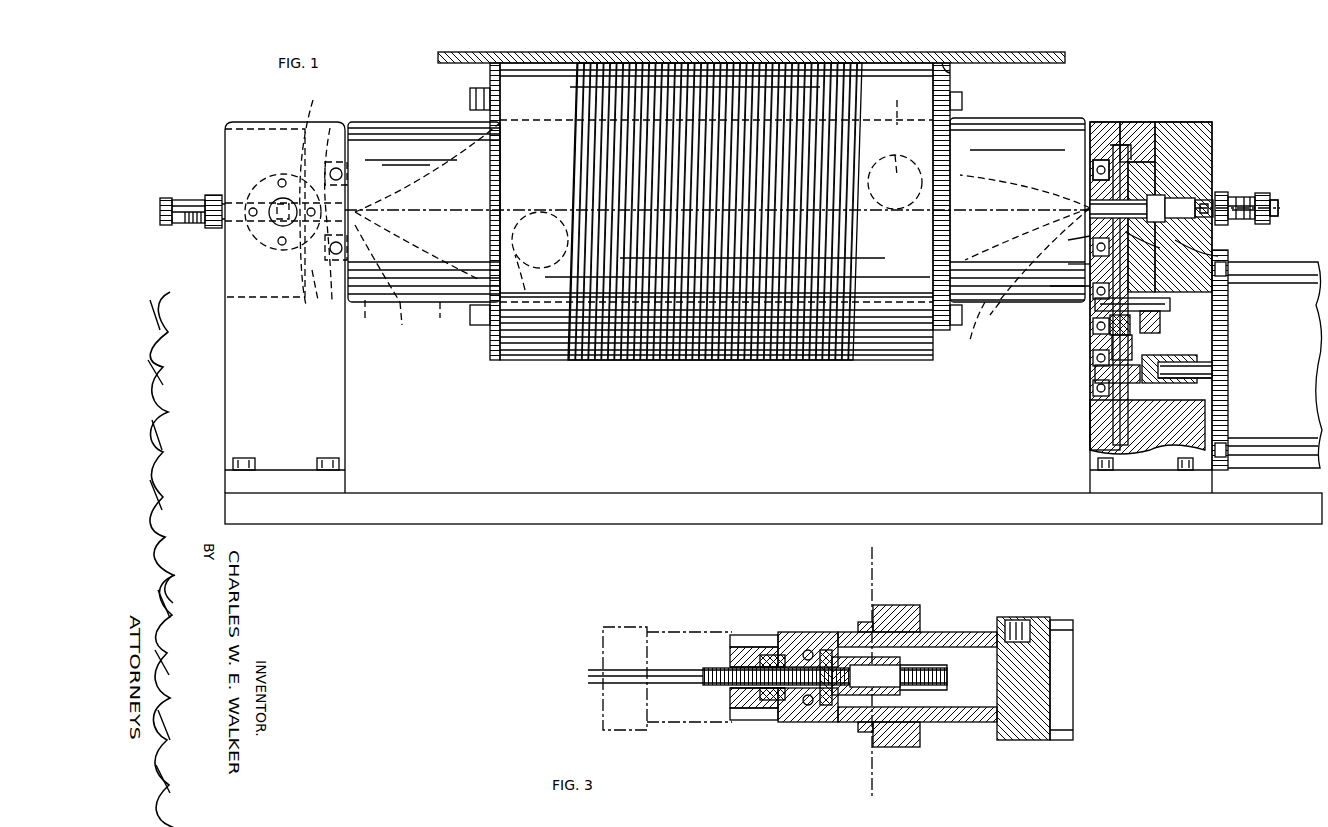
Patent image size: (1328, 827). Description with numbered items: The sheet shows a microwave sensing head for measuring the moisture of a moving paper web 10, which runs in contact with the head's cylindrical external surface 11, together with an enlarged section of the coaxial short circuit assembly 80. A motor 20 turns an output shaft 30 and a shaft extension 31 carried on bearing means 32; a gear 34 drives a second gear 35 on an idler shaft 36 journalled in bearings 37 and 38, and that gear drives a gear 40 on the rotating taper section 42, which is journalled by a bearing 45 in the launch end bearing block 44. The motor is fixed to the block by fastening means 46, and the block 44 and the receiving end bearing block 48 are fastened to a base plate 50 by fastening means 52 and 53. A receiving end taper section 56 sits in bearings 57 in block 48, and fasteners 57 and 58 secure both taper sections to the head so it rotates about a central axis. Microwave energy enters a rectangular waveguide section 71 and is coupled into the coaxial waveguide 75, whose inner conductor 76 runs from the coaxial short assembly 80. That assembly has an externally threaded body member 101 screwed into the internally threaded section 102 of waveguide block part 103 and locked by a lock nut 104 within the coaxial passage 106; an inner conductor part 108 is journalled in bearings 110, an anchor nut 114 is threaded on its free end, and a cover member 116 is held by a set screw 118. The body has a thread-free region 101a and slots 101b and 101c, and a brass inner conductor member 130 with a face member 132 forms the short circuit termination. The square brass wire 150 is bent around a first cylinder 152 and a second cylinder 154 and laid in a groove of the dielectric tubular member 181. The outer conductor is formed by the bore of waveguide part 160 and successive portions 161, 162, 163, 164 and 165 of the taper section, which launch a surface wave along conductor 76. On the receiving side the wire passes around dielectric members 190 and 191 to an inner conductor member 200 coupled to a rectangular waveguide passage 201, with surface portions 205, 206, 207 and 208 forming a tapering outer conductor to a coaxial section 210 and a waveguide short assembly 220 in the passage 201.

In FIG. 1, the moving paper web 10 is at (1050, 52).
In FIG. 1, the cylindrical external surface 11 is at (956, 72).
In FIG. 1, the motor 20 is at (1268, 262).
In FIG. 1, the output shaft 30 is at (1200, 368).
In FIG. 1, the shaft extension 31 is at (1212, 386).
In FIG. 1, the bearing means 32 is at (1092, 382).
In FIG. 1, the gear 34 is at (1098, 410).
In FIG. 1, the second gear 35 is at (1092, 345).
In FIG. 1, the idler shaft 36 is at (1170, 306).
In FIG. 1, the bearing 37 is at (1090, 318).
In FIG. 1, the bearing 38 is at (1160, 322).
In FIG. 1, the gear 40 is at (1140, 140).
In FIG. 1, the rotating taper section 42 is at (1030, 118).
In FIG. 1, the launch end bearing block 44 is at (1120, 122).
In FIG. 1, the bearing 45 is at (1096, 158).
In FIG. 1, the fastening means 46 is at (1225, 272).
In FIG. 1, the receiving end bearing block 48 is at (262, 122).
In FIG. 1, the base plate 50 is at (560, 524).
In FIG. 1, the fastening means 52 is at (1098, 465).
In FIG. 1, the fastening means 53 is at (345, 466).
In FIG. 1, the receiving end taper section 56 is at (415, 122).
In FIG. 1, the bearings / fasteners 57 is at (340, 127).
In FIG. 1, the fasteners 58 is at (470, 100).
In FIG. 1, the rectangular waveguide section 71 is at (1160, 206).
In FIG. 3, the rectangular waveguide section 71 is at (635, 627).
In FIG. 1, the coaxial waveguide 75 is at (1125, 150).
In FIG. 1, the inner conductor 76 is at (1025, 183).
In FIG. 3, the inner conductor 76 is at (593, 680).
In FIG. 1, the coaxial short circuit assembly 80 is at (186, 230).
In FIG. 3, the coaxial short circuit assembly 80 is at (1040, 605).
In FIG. 1, the externally threaded body member 101 is at (1240, 197).
In FIG. 3, the externally threaded body member 101 is at (960, 632).
In FIG. 3, the region with external threads removed 101a is at (765, 632).
In FIG. 3, the slot 101b is at (748, 633).
In FIG. 3, the slot 101c is at (770, 722).
In FIG. 1, the internally threaded section 102 is at (1205, 217).
In FIG. 1, the waveguide block part 103 is at (1205, 135).
In FIG. 3, the waveguide block part 103 is at (875, 570).
In FIG. 1, the lock nut 104 is at (1222, 192).
In FIG. 3, the lock nut 104 is at (905, 605).
In FIG. 1, the coaxial passage 106 is at (1211, 252).
In FIG. 3, the coaxial passage 106 is at (700, 632).
In FIG. 3, the inner conductor part 108 is at (942, 690).
In FIG. 3, the bearings 110 is at (826, 650).
In FIG. 3, the anchor nut 114 is at (905, 656).
In FIG. 1, the cover member 116 is at (1278, 212).
In FIG. 3, the cover member 116 is at (1073, 650).
In FIG. 3, the set screw 118 is at (1040, 620).
In FIG. 3, the inner conductor member 130 is at (803, 645).
In FIG. 3, the face member 132 is at (735, 700).
In FIG. 1, the square brass wire 150 is at (522, 215).
In FIG. 1, the first cylinder 152 is at (909, 147).
In FIG. 1, the second cylinder 154 is at (906, 107).
In FIG. 1, the waveguide part 160 is at (1070, 288).
In FIG. 1, the portion of taper section 161 is at (1156, 244).
In FIG. 1, the portion of taper section 162 is at (1070, 265).
In FIG. 1, the interior flaring surface 163 is at (1067, 240).
In FIG. 1, the interior flaring surface 164 is at (998, 313).
In FIG. 1, the interior flaring surface 165 is at (971, 328).
In FIG. 1, the tubular member of dielectric material 181 is at (568, 62).
In FIG. 1, the outer dielectric member 190 is at (537, 360).
In FIG. 1, the second dielectric member 191 is at (533, 277).
In FIG. 1, the inner conductor member 200 is at (433, 200).
In FIG. 1, the rectangular waveguide passage 201 is at (270, 250).
In FIG. 1, the surface portion 205 is at (320, 298).
In FIG. 1, the surface portion 206 is at (363, 317).
In FIG. 1, the surface portion 207 is at (401, 323).
In FIG. 1, the surface portion 208 is at (438, 318).
In FIG. 1, the coaxial conductor section 210 is at (312, 122).
In FIG. 1, the waveguide short assembly 220 is at (270, 208).